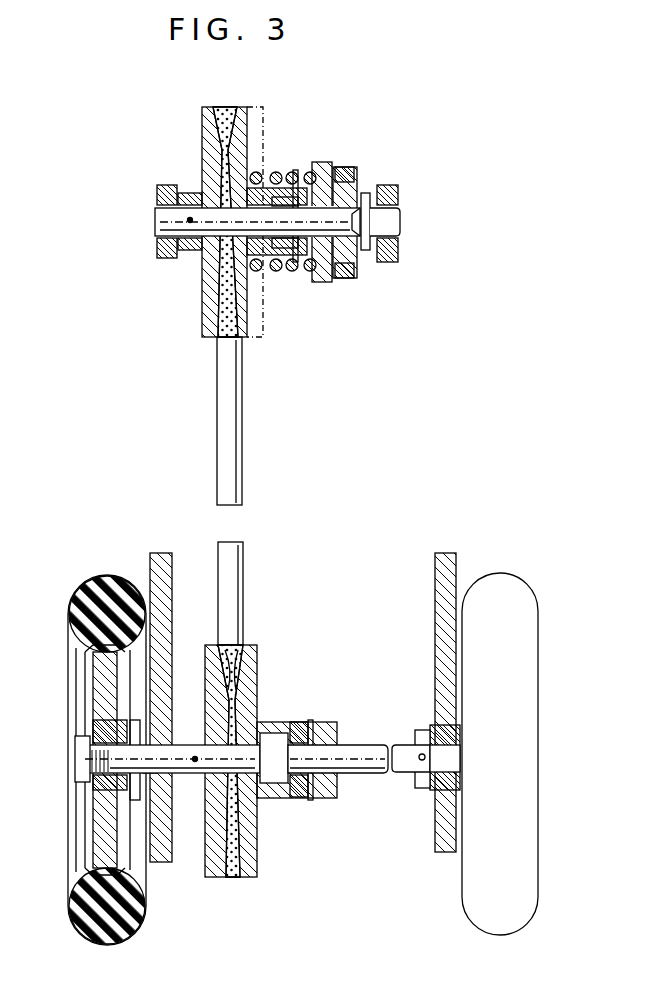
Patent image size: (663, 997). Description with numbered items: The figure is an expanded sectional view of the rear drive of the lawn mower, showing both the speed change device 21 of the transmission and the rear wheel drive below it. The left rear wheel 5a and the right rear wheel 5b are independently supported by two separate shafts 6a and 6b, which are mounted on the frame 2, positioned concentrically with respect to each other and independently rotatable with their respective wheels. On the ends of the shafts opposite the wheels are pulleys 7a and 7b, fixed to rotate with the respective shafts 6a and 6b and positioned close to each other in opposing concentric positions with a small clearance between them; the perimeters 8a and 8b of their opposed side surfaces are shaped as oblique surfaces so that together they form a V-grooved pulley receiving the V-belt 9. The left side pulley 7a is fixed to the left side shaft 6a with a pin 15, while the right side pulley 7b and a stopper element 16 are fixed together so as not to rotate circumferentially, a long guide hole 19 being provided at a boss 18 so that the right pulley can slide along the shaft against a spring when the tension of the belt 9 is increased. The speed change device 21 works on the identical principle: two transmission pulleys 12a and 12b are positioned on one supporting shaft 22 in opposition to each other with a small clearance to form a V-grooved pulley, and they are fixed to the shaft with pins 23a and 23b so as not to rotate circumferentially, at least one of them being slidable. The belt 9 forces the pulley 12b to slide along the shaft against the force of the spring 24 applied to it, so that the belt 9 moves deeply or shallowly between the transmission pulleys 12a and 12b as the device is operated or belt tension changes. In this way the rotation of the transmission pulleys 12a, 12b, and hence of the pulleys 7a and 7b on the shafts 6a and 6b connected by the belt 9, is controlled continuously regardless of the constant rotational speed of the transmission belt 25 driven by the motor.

The frame 2 is at (158, 572).
The left rear wheel 5a is at (128, 935).
The right rear wheel 5b is at (515, 930).
The left rear shaft 6a is at (208, 745).
The right rear shaft 6b is at (368, 750).
The left side pulley 7a is at (213, 668).
The right side pulley 7b is at (252, 667).
The perimeter of opposed side surface of left pulley 8a is at (228, 650).
The perimeter of opposed side surface of right pulley 8b is at (238, 648).
The V-belt 9 is at (236, 396).
The transmission pulley 12a is at (201, 137).
The transmission pulley 12b is at (240, 137).
The pin 15 is at (196, 778).
The stopper element 16 is at (320, 280).
The boss 18 is at (264, 173).
The long guide hole 19 is at (290, 268).
The speed change device 21 is at (264, 108).
The supporting shaft 22 is at (160, 222).
The pin 23a is at (193, 220).
The pin 23b is at (296, 170).
The spring 24 is at (280, 276).
The transmission belt 25 is at (344, 167).